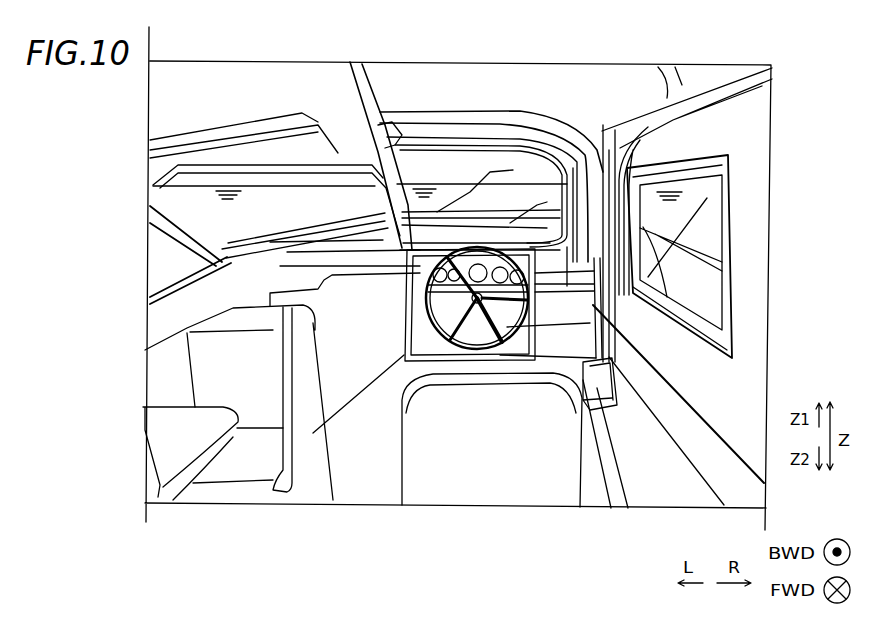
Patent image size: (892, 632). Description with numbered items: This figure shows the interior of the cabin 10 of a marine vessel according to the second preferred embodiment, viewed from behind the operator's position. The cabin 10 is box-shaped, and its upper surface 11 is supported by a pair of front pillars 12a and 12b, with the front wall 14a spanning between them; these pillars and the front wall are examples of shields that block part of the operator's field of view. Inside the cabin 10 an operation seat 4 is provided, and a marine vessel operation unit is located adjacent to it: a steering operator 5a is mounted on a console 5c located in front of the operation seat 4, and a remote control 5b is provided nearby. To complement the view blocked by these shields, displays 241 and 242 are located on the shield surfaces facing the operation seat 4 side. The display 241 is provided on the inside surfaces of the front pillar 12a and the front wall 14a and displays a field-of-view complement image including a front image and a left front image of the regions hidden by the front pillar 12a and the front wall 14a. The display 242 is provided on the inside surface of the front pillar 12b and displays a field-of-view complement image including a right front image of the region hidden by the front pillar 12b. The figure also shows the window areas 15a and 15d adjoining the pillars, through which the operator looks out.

The cabin 10 is at (272, 50).
The upper surface 11 is at (444, 85).
The display 241 is at (265, 248).
The display 242 is at (609, 150).
The front pillar 12a is at (251, 270).
The front pillar 12b is at (624, 150).
The front wall 14a is at (408, 196).
The front pillar 15a is at (540, 164).
The side window 15d is at (695, 160).
The steering operator 5a is at (523, 339).
The remote control 5b is at (588, 367).
The console 5c is at (521, 366).
The operation seat 4 is at (537, 468).